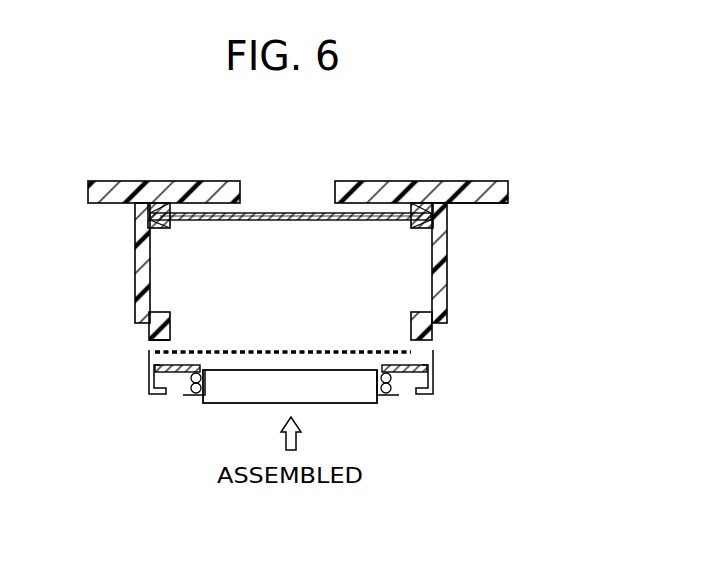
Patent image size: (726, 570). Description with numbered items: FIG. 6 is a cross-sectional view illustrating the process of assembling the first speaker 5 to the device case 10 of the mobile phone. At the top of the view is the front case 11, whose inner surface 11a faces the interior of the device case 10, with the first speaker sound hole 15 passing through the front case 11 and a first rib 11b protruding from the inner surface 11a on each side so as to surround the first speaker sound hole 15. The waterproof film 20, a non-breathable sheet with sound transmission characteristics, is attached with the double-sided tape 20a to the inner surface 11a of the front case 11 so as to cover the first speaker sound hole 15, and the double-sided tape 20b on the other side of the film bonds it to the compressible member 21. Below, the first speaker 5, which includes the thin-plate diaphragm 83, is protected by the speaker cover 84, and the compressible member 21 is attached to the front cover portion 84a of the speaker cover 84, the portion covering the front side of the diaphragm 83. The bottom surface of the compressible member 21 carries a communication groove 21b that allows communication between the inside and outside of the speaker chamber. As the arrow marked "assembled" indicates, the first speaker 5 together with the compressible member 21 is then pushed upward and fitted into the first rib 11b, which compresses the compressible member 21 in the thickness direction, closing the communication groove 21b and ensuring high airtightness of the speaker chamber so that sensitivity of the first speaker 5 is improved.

The first speaker 5 is at (368, 416).
The device case 10 is at (164, 192).
The front case 11 is at (367, 190).
The inner surface of the front case 11a is at (492, 203).
The first rib 11b is at (142, 312).
The first speaker sound hole 15 is at (240, 196).
The waterproof film 20 is at (218, 213).
The double-sided tape 20a is at (163, 205).
The double-sided tape 20b is at (148, 220).
The compressible member 21 is at (155, 315).
The communication groove 21b is at (160, 341).
The diaphragm 83 is at (172, 380).
The speaker cover 84 is at (156, 397).
The front cover portion 84a is at (338, 350).